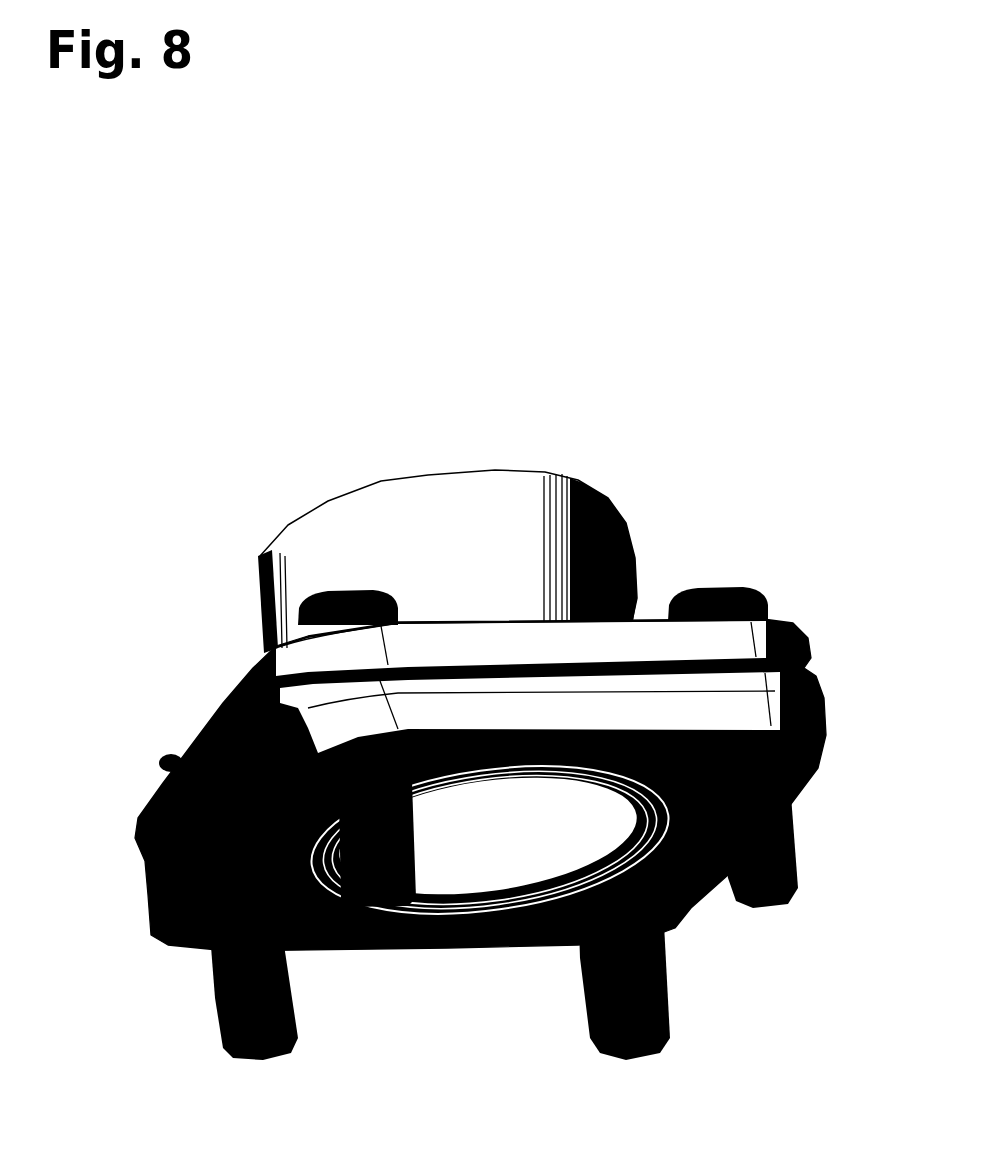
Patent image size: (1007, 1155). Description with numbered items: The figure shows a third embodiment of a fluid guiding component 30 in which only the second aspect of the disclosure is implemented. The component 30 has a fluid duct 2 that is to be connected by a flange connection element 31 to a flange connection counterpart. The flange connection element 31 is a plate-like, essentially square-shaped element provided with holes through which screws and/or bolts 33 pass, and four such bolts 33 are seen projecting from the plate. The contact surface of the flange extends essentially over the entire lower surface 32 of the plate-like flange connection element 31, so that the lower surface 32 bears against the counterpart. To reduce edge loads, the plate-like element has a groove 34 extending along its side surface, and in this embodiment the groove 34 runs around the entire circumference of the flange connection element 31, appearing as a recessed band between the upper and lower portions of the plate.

The component 30 is at (455, 423).
The flange connection element 31 is at (497, 636).
The lower surface 32 is at (673, 917).
The screws and/or bolts 33 is at (770, 837).
The groove 34 is at (703, 670).
The fluid duct 2 is at (470, 822).